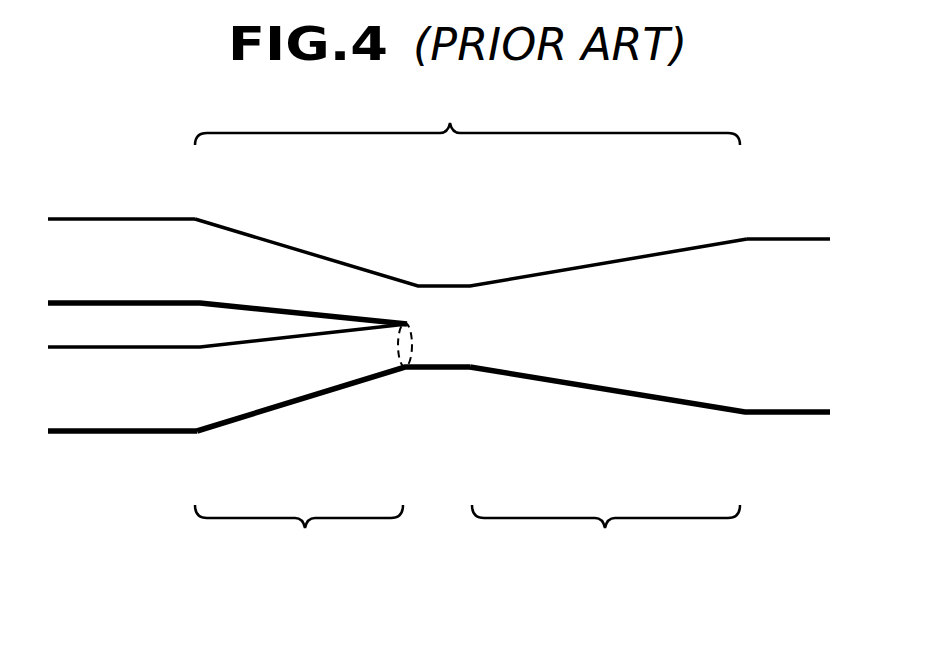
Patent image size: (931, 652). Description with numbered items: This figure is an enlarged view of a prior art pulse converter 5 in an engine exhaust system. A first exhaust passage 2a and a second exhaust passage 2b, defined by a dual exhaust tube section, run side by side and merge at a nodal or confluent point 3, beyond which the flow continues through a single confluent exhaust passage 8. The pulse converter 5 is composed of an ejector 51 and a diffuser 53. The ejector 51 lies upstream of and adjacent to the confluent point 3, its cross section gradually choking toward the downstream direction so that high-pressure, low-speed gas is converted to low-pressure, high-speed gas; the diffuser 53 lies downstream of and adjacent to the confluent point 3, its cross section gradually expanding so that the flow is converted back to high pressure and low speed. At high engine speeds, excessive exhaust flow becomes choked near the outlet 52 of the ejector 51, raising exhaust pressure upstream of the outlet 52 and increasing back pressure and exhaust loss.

The first exhaust passage 2a is at (100, 427).
The second exhaust passage 2b is at (125, 228).
The confluent point 3 is at (420, 297).
The pulse converter 5 is at (467, 116).
The confluent exhaust passage 8 is at (795, 253).
The ejector 51 is at (259, 434).
The outlet 52 is at (424, 370).
The diffuser 53 is at (650, 466).